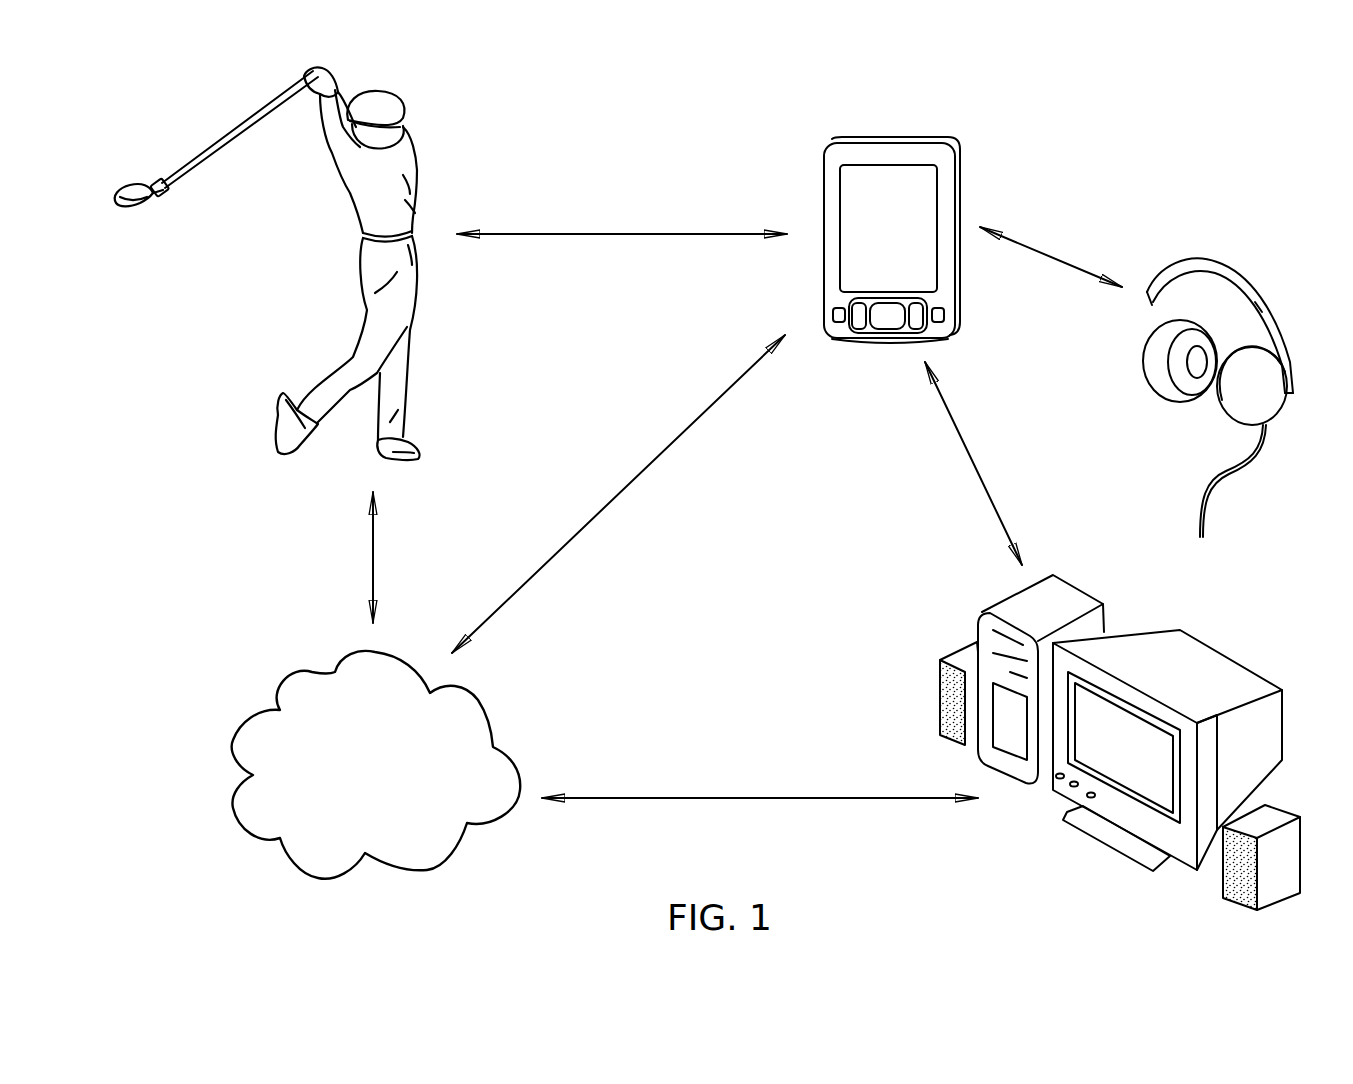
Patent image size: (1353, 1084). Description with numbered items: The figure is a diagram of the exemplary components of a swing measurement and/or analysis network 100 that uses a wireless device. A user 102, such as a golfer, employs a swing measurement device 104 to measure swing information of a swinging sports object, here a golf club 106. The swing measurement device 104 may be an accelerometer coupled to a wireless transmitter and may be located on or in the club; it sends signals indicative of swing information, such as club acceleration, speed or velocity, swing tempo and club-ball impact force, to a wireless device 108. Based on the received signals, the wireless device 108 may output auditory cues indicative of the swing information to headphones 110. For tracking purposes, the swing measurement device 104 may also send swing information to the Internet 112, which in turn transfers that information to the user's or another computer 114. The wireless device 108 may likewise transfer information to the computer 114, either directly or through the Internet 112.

The swing measurement and/or analysis network 100 is at (566, 148).
The user 102 is at (415, 300).
The swing measurement device 104 is at (152, 200).
The golf club 106 is at (138, 210).
The wireless device 108 is at (955, 177).
The headphones 110 is at (1192, 265).
The Internet 112 is at (279, 683).
The computer 114 is at (940, 676).